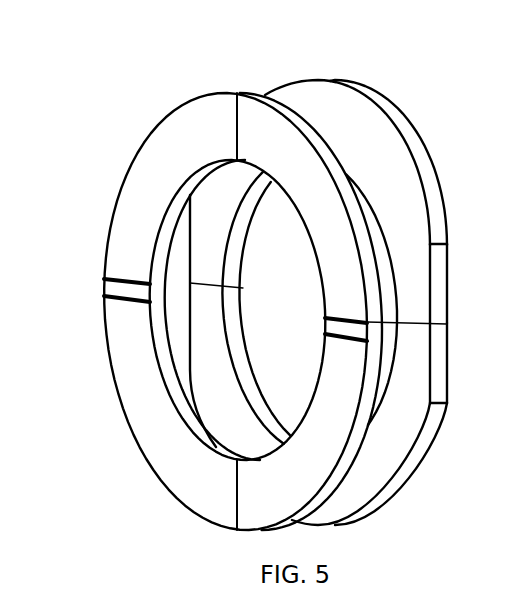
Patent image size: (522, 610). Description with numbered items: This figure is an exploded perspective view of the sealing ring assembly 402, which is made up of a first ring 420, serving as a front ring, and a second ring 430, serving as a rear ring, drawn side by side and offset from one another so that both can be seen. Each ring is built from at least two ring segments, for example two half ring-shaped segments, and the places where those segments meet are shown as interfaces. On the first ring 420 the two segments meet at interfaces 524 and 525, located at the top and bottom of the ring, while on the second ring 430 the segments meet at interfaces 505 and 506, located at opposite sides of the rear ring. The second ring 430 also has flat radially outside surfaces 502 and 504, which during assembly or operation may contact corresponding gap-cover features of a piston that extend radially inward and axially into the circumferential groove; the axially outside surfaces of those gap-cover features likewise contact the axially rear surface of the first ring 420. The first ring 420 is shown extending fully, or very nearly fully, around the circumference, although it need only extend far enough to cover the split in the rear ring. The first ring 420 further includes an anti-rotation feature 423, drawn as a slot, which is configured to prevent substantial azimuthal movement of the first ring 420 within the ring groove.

The sealing ring assembly 402 is at (479, 98).
The first ring 420 is at (220, 144).
The second ring 430 is at (378, 152).
The anti-rotation feature 423 is at (322, 312).
The radially outside surface 502 is at (450, 248).
The radially outside surface 504 is at (184, 340).
The interface 505 is at (450, 330).
The interface 506 is at (184, 281).
The interface 524 is at (238, 88).
The interface 525 is at (235, 536).